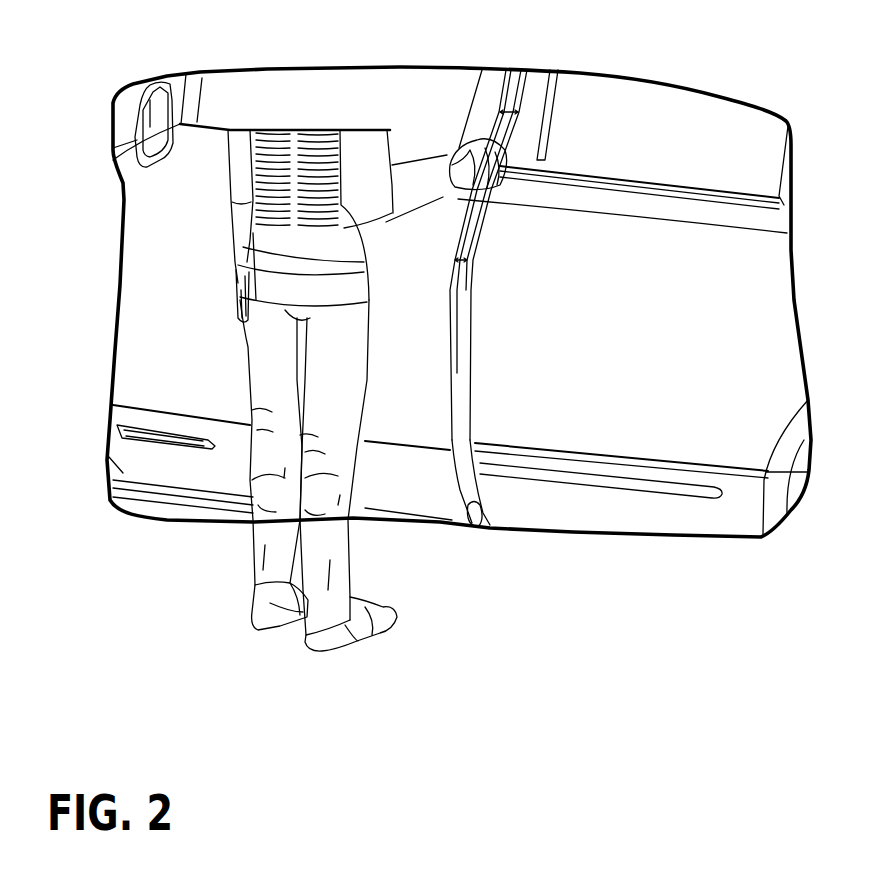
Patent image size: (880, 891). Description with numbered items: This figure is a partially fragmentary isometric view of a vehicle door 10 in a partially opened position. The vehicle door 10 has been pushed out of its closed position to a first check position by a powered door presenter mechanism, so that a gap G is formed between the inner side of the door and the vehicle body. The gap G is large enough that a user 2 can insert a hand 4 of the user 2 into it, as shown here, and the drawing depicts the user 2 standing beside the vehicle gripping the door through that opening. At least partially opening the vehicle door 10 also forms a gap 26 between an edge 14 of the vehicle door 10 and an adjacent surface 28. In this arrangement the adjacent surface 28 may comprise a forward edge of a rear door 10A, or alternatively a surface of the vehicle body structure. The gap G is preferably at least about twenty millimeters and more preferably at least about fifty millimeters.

The user 2 is at (237, 263).
The hand 4 is at (497, 172).
The gap G is at (505, 128).
The vehicle door 10 is at (143, 350).
The rear door 10A is at (685, 520).
The edge 14 is at (473, 527).
The gap 26 is at (462, 400).
The adjacent surface 28 is at (480, 525).